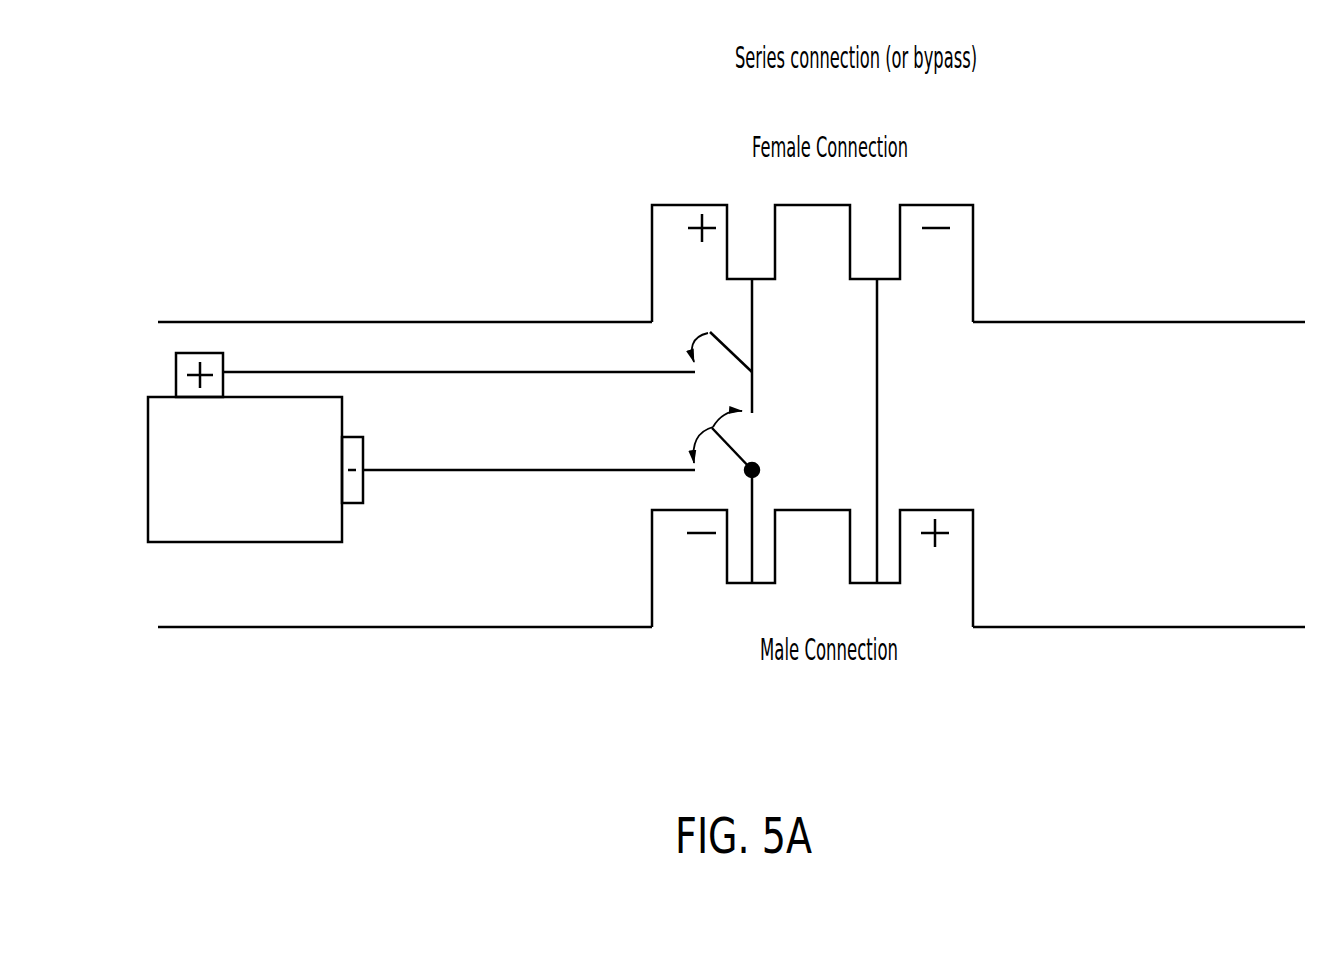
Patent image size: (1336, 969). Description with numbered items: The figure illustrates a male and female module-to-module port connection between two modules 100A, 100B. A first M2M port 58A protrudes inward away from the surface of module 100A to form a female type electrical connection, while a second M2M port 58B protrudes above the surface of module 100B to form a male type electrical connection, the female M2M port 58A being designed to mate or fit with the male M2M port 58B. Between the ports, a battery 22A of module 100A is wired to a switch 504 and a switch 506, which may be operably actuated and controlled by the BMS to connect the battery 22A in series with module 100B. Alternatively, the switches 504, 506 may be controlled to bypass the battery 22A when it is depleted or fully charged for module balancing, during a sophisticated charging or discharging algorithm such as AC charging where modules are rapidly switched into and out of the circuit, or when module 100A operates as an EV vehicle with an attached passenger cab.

The battery 22A is at (170, 482).
The first M2M port 58A is at (978, 292).
The second M2M port 58B is at (938, 503).
The module 100A is at (1230, 320).
The module 100B is at (1192, 622).
The switch 504 is at (755, 348).
The switch 506 is at (755, 457).